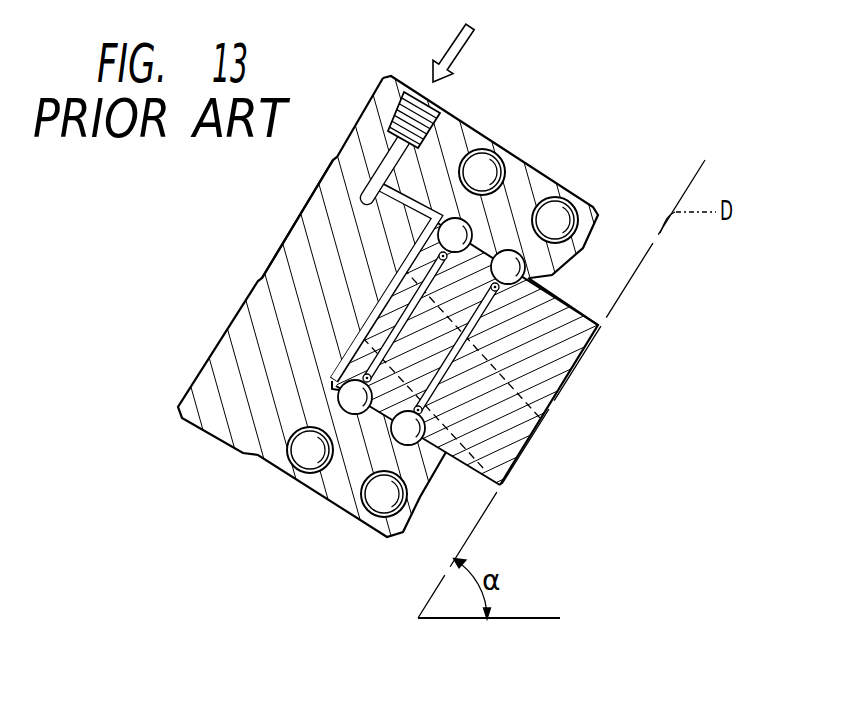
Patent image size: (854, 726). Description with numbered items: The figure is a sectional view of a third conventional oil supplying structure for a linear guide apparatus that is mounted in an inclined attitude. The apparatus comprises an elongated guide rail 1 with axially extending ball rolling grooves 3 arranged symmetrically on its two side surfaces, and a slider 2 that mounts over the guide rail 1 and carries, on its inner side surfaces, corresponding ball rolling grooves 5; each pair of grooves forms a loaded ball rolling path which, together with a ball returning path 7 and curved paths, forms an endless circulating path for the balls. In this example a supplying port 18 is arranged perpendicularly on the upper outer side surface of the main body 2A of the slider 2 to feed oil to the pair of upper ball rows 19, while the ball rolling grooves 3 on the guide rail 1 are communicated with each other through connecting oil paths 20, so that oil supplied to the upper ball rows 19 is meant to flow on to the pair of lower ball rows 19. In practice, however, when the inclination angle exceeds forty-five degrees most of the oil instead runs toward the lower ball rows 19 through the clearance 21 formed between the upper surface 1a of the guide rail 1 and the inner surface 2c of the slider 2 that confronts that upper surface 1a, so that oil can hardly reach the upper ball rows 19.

The guide rail 1 is at (580, 324).
The upper surface of the guide rail 1a is at (462, 276).
The slider 2 is at (350, 109).
The main body of the slider 2A is at (318, 193).
The inner surface of the slider 2c is at (358, 353).
The ball rolling groove of the guide rail 3 is at (411, 446).
The ball rolling groove of the slider 5 is at (390, 433).
The ball returning path 7 is at (384, 491).
The supplying port 18 is at (417, 90).
The ball rows 19 is at (510, 258).
The connecting oil paths 20 is at (515, 383).
The clearance 21 is at (383, 283).